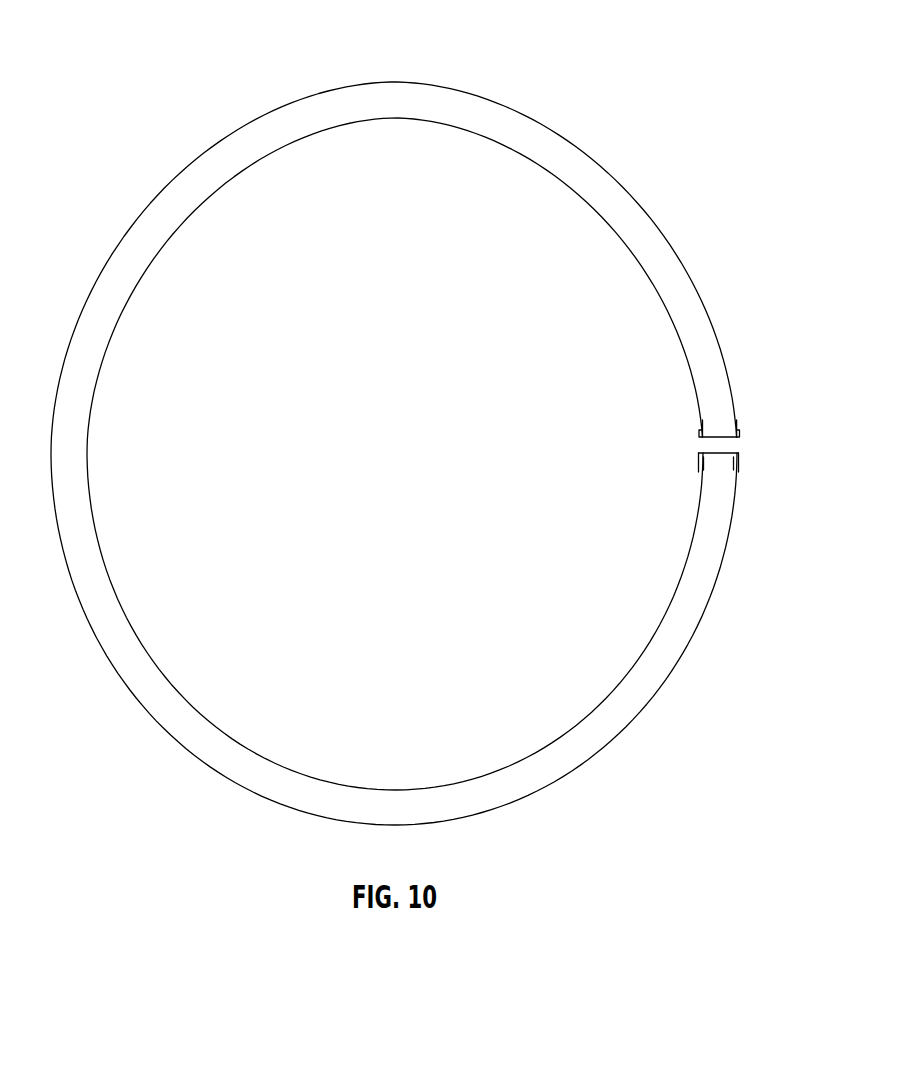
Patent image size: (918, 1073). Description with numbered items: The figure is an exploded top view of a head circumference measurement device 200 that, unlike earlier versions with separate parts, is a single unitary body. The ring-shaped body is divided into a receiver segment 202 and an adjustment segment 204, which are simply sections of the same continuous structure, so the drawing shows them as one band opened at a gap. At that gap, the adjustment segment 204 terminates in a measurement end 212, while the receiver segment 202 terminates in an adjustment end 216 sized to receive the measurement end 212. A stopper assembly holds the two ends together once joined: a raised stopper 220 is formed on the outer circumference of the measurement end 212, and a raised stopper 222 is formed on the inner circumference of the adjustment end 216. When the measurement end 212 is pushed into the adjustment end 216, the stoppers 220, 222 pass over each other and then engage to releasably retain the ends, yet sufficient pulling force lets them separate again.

The head circumference measurement device 200 is at (147, 98).
The receiver segment 202 is at (232, 762).
The adjustment segment 204 is at (425, 100).
The measurement end 212 is at (713, 400).
The adjustment end 216 is at (715, 487).
The raised stopper 220 is at (735, 428).
The raised stopper 222 is at (700, 461).